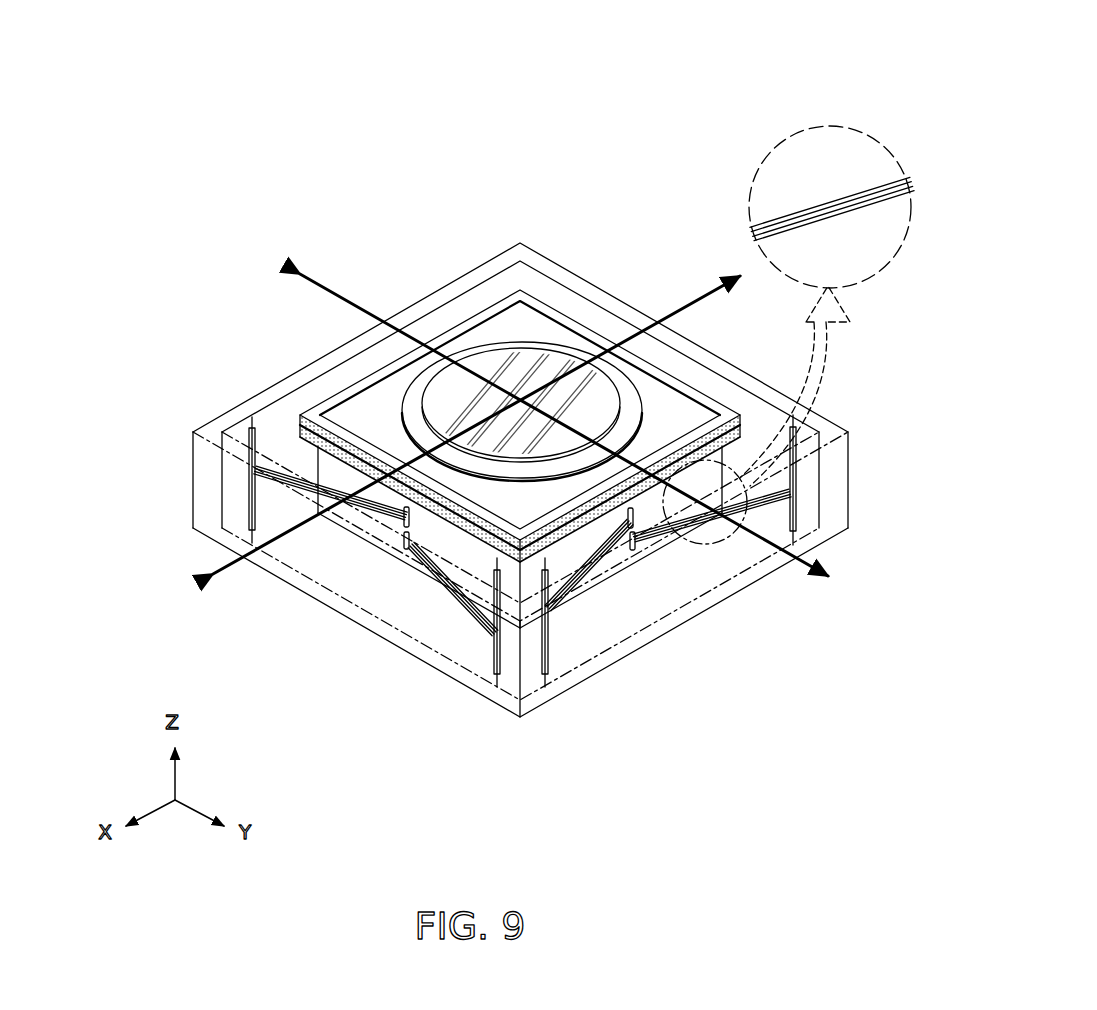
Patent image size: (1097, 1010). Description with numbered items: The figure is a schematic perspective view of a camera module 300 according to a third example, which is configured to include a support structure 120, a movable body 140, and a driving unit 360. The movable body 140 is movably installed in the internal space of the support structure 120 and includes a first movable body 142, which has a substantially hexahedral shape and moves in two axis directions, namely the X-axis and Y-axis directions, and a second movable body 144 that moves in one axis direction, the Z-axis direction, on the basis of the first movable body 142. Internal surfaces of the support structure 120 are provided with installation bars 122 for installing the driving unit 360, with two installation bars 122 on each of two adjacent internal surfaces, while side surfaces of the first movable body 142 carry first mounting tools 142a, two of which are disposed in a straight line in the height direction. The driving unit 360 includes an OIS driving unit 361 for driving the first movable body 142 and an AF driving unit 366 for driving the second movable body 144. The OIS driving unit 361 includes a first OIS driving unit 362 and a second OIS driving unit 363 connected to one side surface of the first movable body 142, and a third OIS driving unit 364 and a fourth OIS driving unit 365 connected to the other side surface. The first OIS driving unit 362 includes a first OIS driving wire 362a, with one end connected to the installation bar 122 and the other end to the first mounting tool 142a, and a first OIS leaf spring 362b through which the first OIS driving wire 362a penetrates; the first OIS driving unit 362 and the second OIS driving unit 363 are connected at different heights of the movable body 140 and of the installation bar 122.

The camera module 300 is at (420, 28).
The support structure 120 is at (562, 258).
The installation bar 122 is at (795, 487).
The movable body 140 is at (453, 318).
The first movable body 142 is at (328, 470).
The first mounting tool 142a is at (641, 524).
The second movable body 144 is at (417, 387).
The driving unit 360 is at (136, 125).
The OIS driving unit 361 is at (190, 92).
The first OIS driving unit 362 is at (742, 628).
The first OIS driving wire 362a is at (855, 202).
The first OIS leaf spring 362b is at (790, 222).
The second OIS driving unit 363 is at (643, 726).
The third OIS driving unit 364 is at (373, 729).
The fourth OIS driving unit 365 is at (308, 653).
The AF driving unit 366 is at (160, 215).